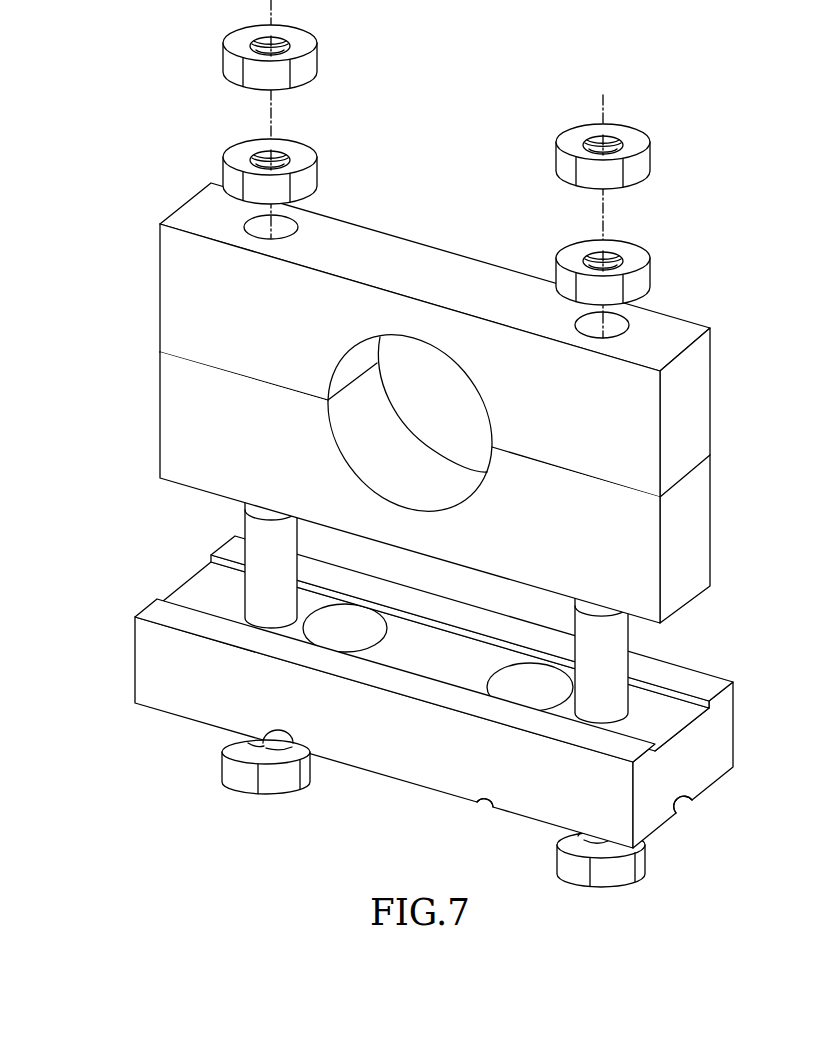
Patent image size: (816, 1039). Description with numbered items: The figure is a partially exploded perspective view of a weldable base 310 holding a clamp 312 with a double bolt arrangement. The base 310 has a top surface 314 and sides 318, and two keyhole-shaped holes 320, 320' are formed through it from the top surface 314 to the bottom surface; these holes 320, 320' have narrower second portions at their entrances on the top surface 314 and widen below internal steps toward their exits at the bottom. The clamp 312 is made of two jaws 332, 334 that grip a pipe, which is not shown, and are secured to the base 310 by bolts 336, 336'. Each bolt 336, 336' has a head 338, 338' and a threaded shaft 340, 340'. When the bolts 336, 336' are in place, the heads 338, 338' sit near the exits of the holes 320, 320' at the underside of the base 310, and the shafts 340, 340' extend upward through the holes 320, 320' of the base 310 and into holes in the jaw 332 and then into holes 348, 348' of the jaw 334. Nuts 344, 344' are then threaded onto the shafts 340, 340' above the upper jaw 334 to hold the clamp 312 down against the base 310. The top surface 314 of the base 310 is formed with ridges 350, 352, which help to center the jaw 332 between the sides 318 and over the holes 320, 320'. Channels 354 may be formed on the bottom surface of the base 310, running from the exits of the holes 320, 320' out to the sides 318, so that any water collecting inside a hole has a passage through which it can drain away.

The weldable base 310 is at (410, 462).
The clamp 312 is at (399, 403).
The top surface 314 is at (449, 692).
The sides 318 is at (213, 713).
The hole 320 is at (365, 635).
The hole 320' is at (511, 680).
The jaw 332 is at (178, 421).
The jaw 334 is at (192, 294).
The bolt 336 is at (310, 769).
The bolt 336' is at (550, 838).
The head 338 is at (287, 778).
The head 338' is at (568, 874).
The shaft 340 is at (243, 563).
The shaft 340' is at (637, 657).
The nut 344 is at (270, 114).
The nut 344' is at (603, 214).
The hole 348 is at (301, 212).
The hole 348' is at (642, 311).
The ridge 350 is at (702, 680).
The ridge 352 is at (622, 748).
The channels 354 is at (687, 811).